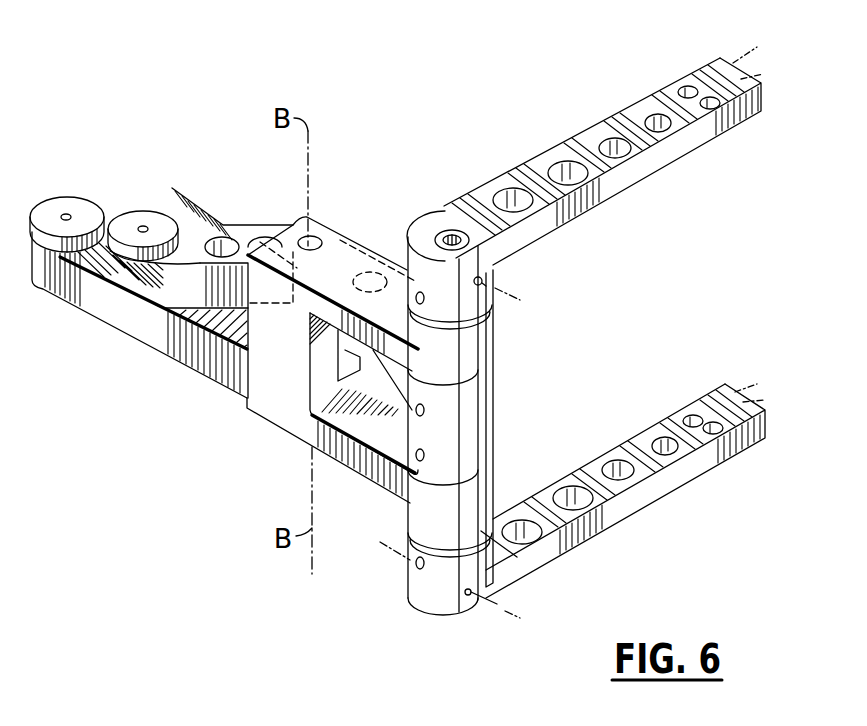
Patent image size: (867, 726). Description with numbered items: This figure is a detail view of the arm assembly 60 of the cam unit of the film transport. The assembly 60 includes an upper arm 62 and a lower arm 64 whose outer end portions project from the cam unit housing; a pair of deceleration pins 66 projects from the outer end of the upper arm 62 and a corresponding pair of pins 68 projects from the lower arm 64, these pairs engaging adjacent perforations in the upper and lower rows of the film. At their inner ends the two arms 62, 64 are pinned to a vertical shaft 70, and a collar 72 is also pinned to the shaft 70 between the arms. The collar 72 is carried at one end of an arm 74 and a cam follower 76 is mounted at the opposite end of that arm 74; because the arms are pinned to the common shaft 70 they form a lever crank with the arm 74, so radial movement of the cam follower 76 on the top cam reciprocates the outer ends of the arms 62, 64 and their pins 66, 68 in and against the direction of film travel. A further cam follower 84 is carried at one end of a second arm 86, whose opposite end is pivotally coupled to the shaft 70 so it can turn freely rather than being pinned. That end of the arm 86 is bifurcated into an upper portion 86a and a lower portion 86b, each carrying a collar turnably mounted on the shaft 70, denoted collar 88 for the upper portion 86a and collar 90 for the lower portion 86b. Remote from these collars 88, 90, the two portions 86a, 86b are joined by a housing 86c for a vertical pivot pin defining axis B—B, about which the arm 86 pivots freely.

The assembly 60 is at (756, 136).
The upper arm 62 is at (645, 102).
The lower arm 64 is at (662, 428).
The deceleration pins 66 is at (757, 46).
The deceleration pins 68 is at (757, 384).
The vertical shaft 70 is at (451, 233).
The collar 72 is at (488, 443).
The arm 74 is at (247, 230).
The cam follower 76 is at (142, 217).
The cam follower 84 is at (65, 200).
The second arm 86 is at (272, 413).
The upper portion 86a is at (407, 241).
The lower portion 86b is at (372, 473).
The housing 86c is at (285, 341).
The collar 88 is at (483, 340).
The collar 90 is at (492, 540).